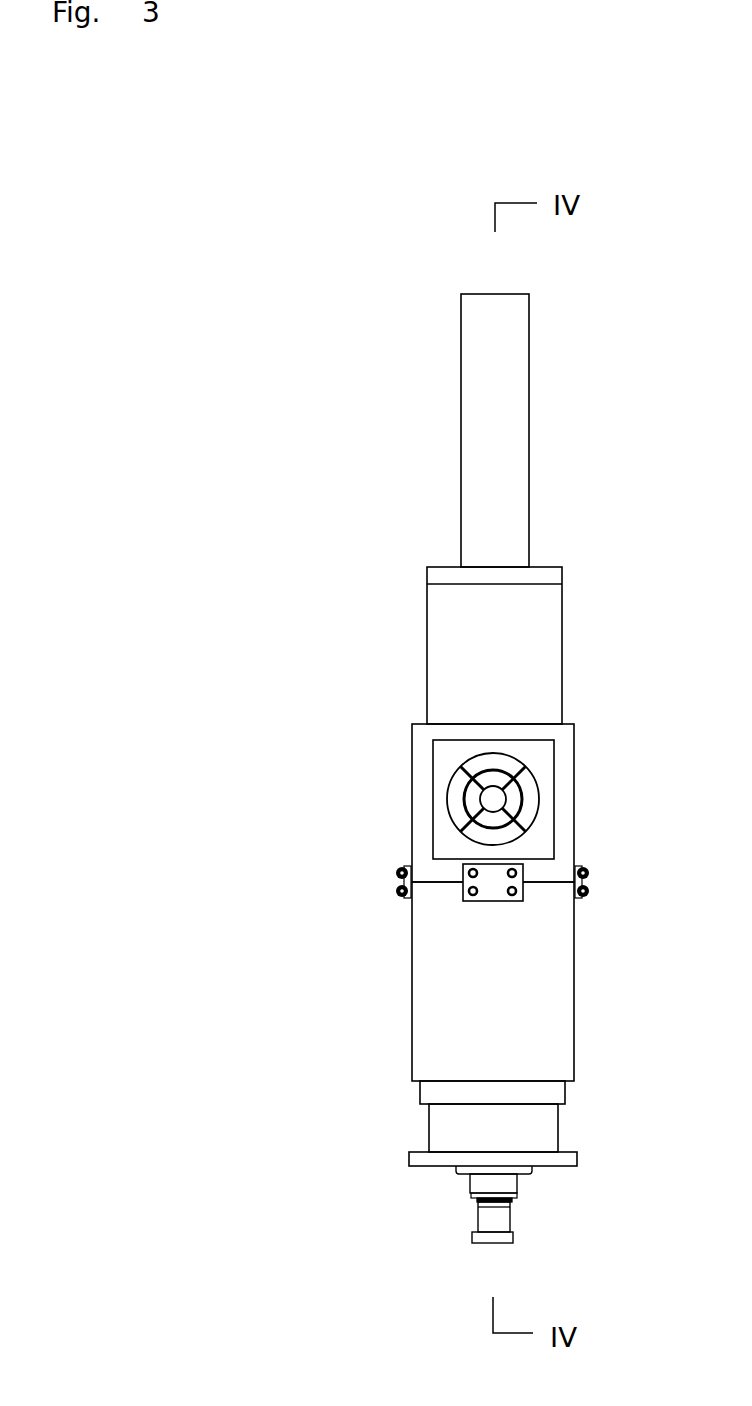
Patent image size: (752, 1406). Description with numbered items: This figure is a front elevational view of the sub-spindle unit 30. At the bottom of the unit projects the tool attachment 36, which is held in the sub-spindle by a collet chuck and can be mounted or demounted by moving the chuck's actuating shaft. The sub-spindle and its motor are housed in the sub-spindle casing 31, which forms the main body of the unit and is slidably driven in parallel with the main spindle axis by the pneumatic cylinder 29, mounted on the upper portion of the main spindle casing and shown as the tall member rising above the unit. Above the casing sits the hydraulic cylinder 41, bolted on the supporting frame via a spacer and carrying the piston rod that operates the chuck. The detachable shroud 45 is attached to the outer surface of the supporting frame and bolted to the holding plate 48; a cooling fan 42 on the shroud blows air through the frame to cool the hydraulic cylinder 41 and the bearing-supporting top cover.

The pneumatic cylinder 29 is at (502, 328).
The hydraulic cylinder 41 is at (540, 576).
The fan 42 is at (530, 792).
The detachable shroud 45 is at (529, 803).
The holding plate 48 is at (484, 895).
The sub-spindle casing 31 is at (562, 981).
The sub-spindle unit 30 is at (508, 1185).
The tool attachment 36 is at (483, 1238).